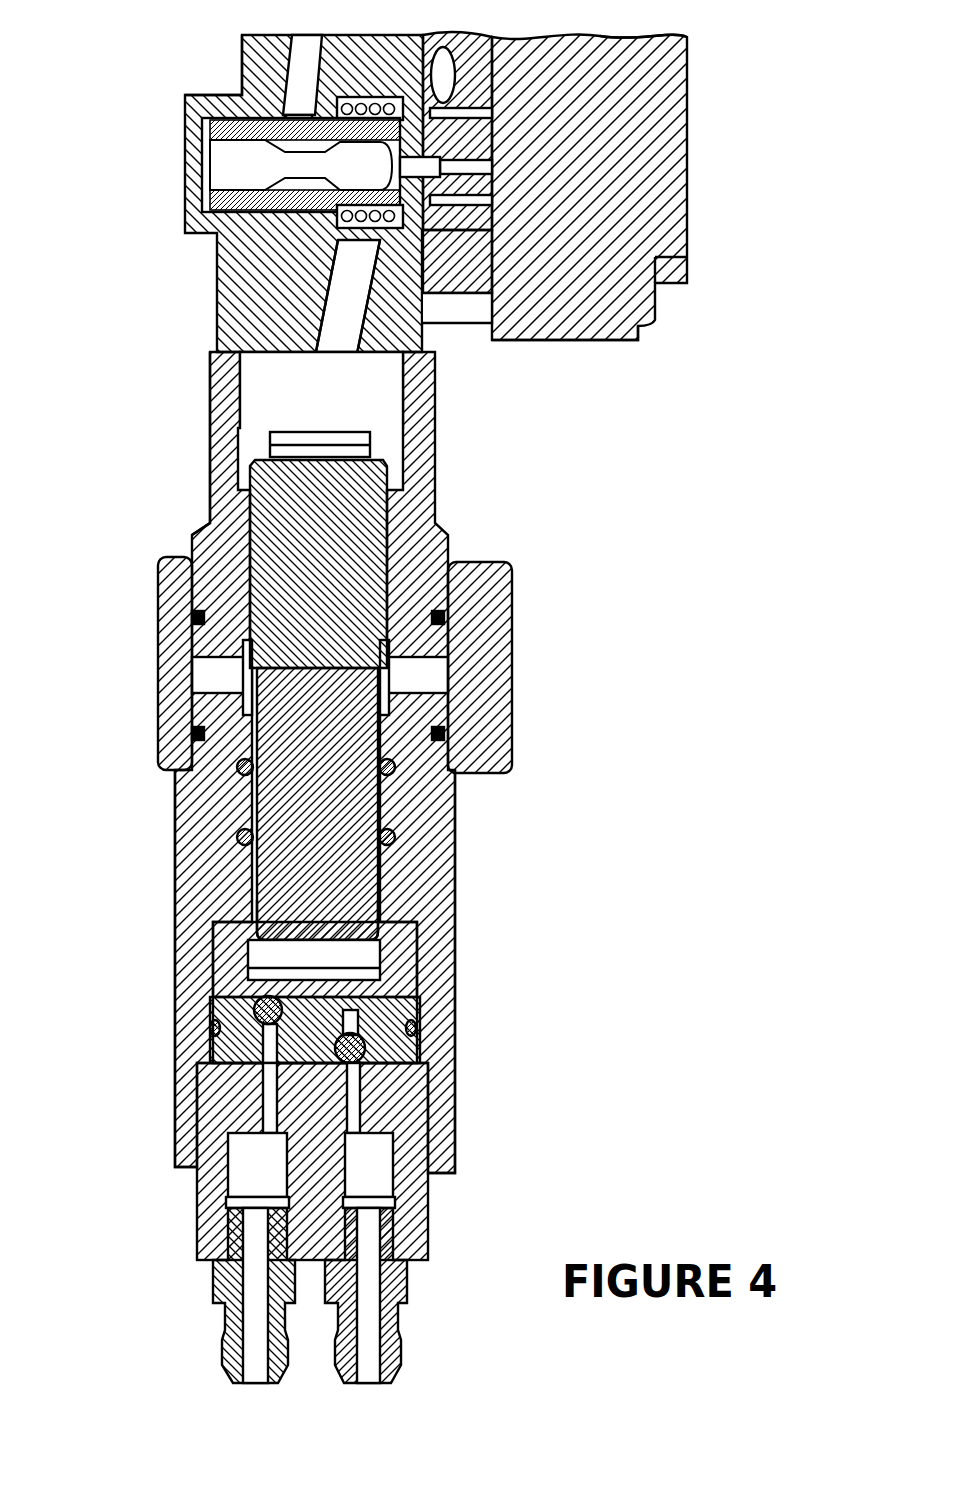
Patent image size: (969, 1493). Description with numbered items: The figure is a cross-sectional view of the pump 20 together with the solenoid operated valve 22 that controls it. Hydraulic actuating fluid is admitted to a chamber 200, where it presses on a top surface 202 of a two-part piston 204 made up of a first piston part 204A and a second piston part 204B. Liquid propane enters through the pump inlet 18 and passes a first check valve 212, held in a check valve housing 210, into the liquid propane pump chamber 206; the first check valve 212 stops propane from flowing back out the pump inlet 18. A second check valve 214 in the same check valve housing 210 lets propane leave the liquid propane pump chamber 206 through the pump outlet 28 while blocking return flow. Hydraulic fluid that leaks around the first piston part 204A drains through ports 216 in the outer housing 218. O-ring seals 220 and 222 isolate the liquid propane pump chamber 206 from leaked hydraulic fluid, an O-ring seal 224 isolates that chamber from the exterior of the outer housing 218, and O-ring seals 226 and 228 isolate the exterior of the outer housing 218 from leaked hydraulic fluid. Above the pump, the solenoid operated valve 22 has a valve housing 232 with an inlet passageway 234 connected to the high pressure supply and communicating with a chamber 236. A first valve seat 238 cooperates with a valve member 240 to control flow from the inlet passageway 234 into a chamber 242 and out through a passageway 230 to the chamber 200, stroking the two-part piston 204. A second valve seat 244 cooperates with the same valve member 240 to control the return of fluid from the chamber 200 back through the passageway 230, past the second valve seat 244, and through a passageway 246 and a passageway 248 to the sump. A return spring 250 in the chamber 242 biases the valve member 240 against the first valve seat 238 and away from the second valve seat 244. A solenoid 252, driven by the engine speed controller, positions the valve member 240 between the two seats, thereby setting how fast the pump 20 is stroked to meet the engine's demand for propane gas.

The pump inlet 18 is at (222, 1340).
The pump 20 is at (148, 500).
The solenoid operated valve 22 is at (632, 340).
The pump outlet 28 is at (395, 1335).
The chamber 200 is at (345, 440).
The top surface 202 is at (395, 492).
The two-part piston 204 is at (292, 805).
The first piston part 204A is at (300, 524).
The second piston part 204B is at (275, 905).
The liquid propane pump chamber 206 is at (342, 963).
The check valve housing 210 is at (212, 1062).
The first check valve 212 is at (258, 1012).
The second check valve 214 is at (366, 1041).
The ports 216 is at (413, 663).
The outer housing 218 is at (413, 846).
The O-ring seal 220 is at (394, 770).
The O-ring seal 222 is at (240, 840).
The O-ring seal 224 is at (210, 1028).
The O-ring seal 226 is at (195, 617).
The O-ring seal 228 is at (193, 728).
The passageway 230 is at (330, 377).
The valve housing 232 is at (232, 280).
The inlet passageway 234 is at (300, 73).
The chamber 236 is at (305, 222).
The first valve seat 238 is at (335, 236).
The valve member 240 is at (258, 150).
The chamber 242 is at (373, 104).
The second valve seat 244 is at (432, 225).
The passageway 246 is at (585, 45).
The passageway 248 is at (462, 42).
The return spring 250 is at (362, 98).
The solenoid 252 is at (655, 208).